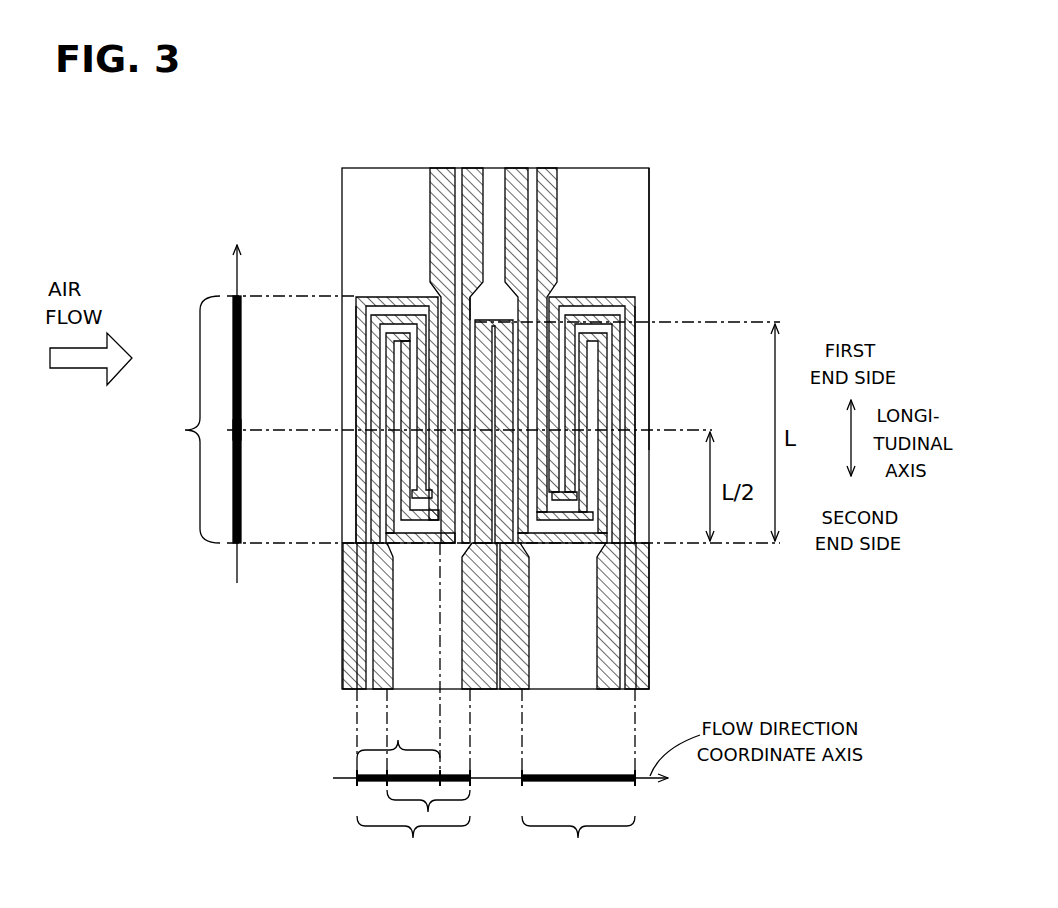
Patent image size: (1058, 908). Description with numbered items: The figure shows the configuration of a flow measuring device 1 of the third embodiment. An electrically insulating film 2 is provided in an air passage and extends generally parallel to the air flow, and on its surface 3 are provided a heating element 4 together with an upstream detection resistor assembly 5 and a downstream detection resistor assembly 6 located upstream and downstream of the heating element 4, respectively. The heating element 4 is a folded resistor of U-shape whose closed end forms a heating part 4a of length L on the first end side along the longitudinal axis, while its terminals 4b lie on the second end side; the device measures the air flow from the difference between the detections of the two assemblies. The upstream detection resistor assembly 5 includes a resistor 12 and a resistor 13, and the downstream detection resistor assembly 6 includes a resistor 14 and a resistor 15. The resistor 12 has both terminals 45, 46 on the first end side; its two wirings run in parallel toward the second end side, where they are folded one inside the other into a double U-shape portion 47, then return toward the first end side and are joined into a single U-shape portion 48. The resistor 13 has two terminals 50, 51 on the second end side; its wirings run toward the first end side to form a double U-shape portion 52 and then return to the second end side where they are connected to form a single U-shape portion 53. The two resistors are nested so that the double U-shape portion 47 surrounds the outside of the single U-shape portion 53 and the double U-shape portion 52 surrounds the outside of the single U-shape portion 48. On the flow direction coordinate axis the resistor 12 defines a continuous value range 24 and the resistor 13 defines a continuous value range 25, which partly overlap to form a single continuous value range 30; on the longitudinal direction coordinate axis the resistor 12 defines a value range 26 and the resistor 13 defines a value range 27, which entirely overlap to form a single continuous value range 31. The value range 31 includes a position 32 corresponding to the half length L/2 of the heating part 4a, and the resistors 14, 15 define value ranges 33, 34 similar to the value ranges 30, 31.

The flow measuring device 1 is at (673, 137).
The electrically insulating film 2 is at (650, 187).
The surface 3 is at (640, 232).
The heating element 4 is at (500, 319).
The heating part 4a is at (543, 546).
The terminals 4b is at (475, 691).
The upstream detection resistor assembly 5 is at (363, 374).
The downstream detection resistor assembly 6 is at (623, 457).
The resistor 12 is at (472, 305).
The resistor 13 is at (352, 515).
The resistor 14 is at (615, 644).
The resistor 15 is at (638, 515).
The continuous value range 24 is at (400, 806).
The continuous value range 25 is at (380, 748).
The continuous value range 26 is at (202, 419).
The continuous value range 27 is at (184, 430).
The single continuous value range 30 is at (413, 825).
The single continuous value range 31 is at (232, 284).
The position 32 is at (240, 438).
The value range 33 is at (578, 825).
The value range 34 is at (435, 419).
The terminal 45 is at (474, 173).
The terminal 46 is at (441, 173).
The double U-shape portion 47 is at (427, 548).
The single U-shape portion 48 is at (397, 340).
The terminal 50 is at (346, 659).
The terminal 51 is at (345, 677).
The double U-shape portion 52 is at (384, 294).
The single U-shape portion 53 is at (391, 548).